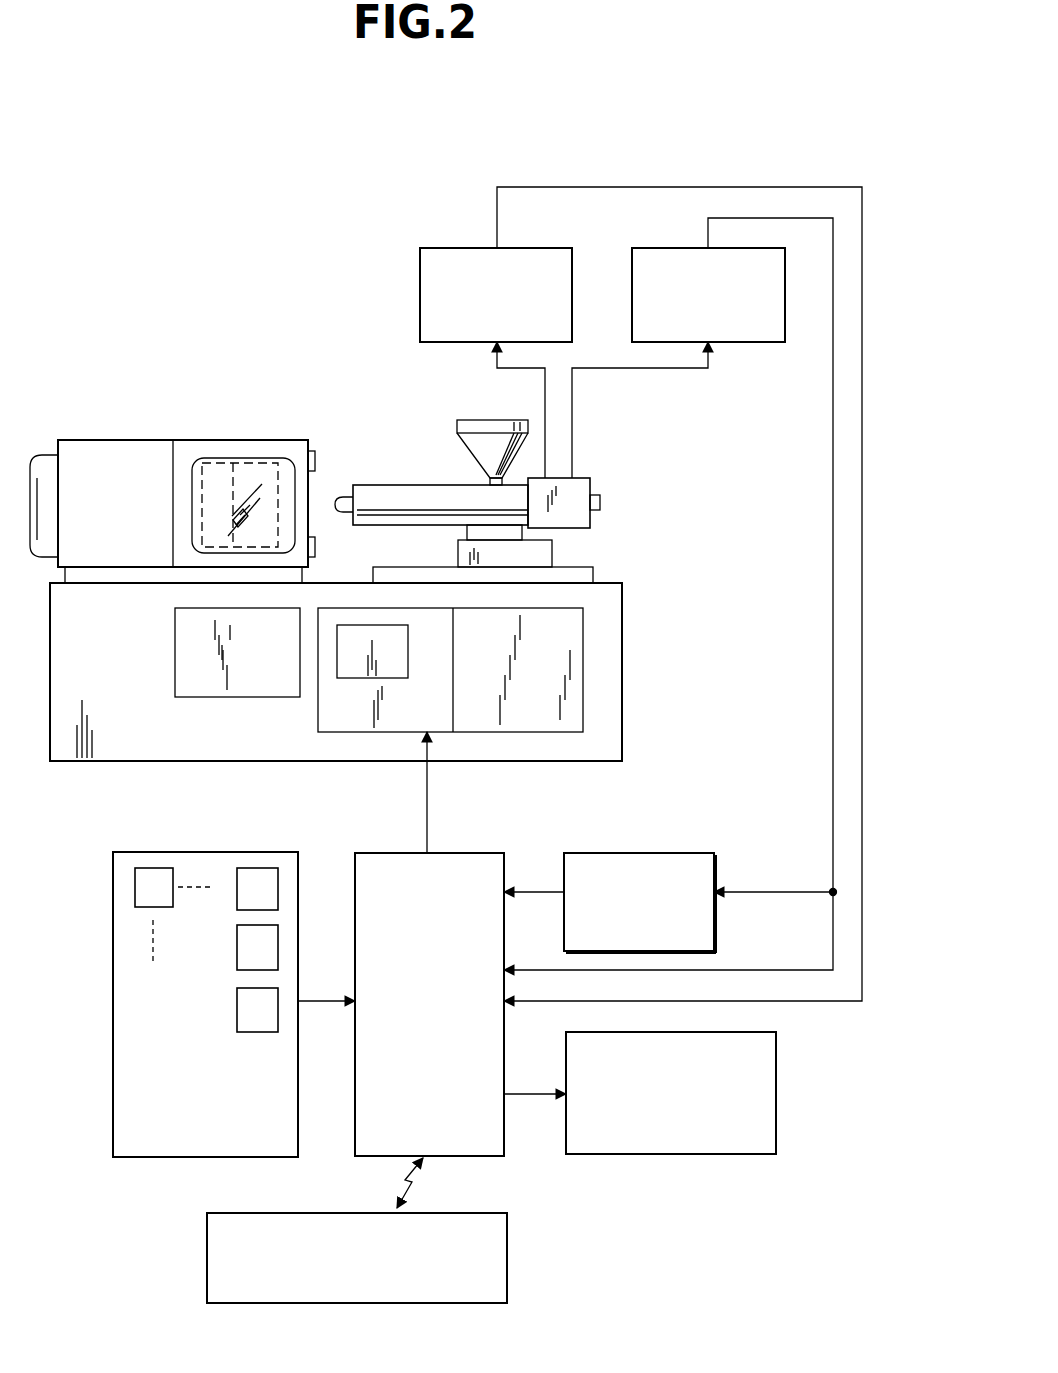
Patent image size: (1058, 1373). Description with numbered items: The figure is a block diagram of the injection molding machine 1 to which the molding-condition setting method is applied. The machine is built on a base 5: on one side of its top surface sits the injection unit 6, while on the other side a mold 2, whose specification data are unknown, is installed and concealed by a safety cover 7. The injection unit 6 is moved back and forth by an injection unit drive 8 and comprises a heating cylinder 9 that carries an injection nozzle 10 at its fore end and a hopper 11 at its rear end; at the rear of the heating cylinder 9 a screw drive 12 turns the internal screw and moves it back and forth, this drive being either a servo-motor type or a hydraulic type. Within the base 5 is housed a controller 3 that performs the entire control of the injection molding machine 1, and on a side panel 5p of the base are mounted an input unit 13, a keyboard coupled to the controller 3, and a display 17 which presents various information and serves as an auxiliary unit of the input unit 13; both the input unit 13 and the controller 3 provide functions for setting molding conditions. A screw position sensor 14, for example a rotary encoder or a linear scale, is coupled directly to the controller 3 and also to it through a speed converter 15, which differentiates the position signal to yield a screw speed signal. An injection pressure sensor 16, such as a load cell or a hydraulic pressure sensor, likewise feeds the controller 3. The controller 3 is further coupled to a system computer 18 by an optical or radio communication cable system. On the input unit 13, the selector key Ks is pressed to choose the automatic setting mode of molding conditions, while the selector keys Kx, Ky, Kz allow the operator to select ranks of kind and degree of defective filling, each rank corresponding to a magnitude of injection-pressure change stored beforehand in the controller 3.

The injection molding machine 1 is at (665, 488).
The mold 2 is at (222, 463).
The controller 3 is at (468, 852).
The base 5 is at (620, 668).
The side panel 5p is at (358, 705).
The injection unit 6 is at (390, 392).
The safety cover 7 is at (178, 440).
The injection unit drive 8 is at (552, 552).
The heating cylinder 9 is at (418, 485).
The injection nozzle 10 is at (345, 497).
The hopper 11 is at (478, 420).
The screw drive 12 is at (597, 483).
The input unit (keyboard) 13 is at (113, 1022).
The screw position sensor 14 is at (632, 275).
The speed converter 15 is at (648, 852).
The injection pressure sensor 16 is at (420, 262).
The display 17 is at (720, 1156).
The system computer 18 is at (507, 1255).
The selector key Ks is at (150, 868).
The selector key Kx is at (237, 880).
The selector key Ky is at (278, 935).
The selector key Kz is at (278, 1015).